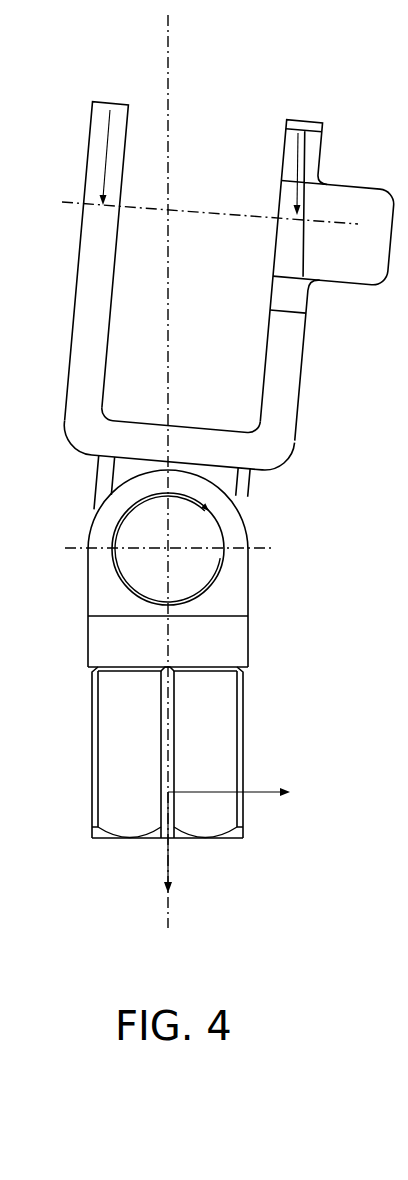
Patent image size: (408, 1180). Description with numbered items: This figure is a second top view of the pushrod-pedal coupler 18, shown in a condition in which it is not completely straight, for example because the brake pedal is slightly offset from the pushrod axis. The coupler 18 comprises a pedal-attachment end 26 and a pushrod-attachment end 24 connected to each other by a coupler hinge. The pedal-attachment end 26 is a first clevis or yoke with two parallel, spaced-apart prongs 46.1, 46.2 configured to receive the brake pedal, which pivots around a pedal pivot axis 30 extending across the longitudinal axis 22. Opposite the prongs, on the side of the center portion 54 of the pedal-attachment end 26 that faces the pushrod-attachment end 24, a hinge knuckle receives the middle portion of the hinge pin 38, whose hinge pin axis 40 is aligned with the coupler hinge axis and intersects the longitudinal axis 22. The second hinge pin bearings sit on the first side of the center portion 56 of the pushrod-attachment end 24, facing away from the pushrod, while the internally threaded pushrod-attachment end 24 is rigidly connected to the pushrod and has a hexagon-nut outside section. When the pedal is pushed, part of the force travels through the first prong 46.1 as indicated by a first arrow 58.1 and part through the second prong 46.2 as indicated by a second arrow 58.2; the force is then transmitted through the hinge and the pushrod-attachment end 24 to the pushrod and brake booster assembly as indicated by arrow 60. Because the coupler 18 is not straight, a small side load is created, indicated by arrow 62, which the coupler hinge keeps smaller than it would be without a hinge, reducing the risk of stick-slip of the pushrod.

The pushrod-pedal coupler 18 is at (62, 704).
The longitudinal axis 22 is at (168, 25).
The pedal pivot axis 30 is at (70, 205).
The pedal-attachment end 26 is at (83, 340).
The first prong 46.1 is at (282, 387).
The second prong 46.2 is at (83, 384).
The center portion of the pedal-attachment end 54 is at (90, 447).
The first arrow 58.1 is at (305, 161).
The second arrow 58.2 is at (105, 158).
The pushrod-attachment end 24 is at (237, 616).
The center portion of the pushrod-attachment end 56 is at (252, 638).
The hinge pin 38 is at (190, 575).
The hinge pin axis 40 is at (168, 548).
The arrow 62 is at (210, 790).
The arrow 60 is at (165, 862).